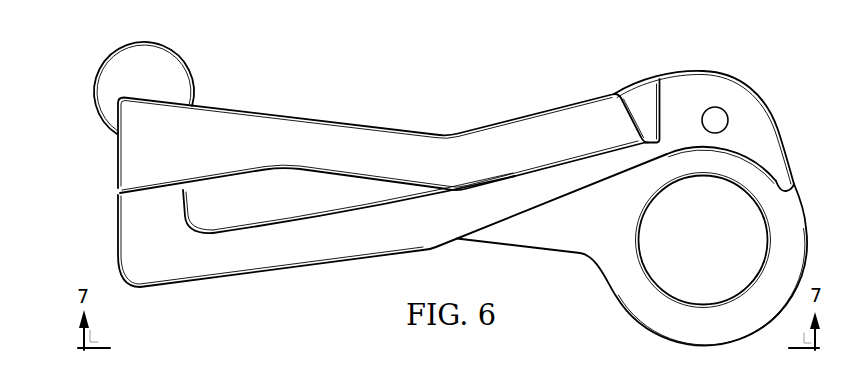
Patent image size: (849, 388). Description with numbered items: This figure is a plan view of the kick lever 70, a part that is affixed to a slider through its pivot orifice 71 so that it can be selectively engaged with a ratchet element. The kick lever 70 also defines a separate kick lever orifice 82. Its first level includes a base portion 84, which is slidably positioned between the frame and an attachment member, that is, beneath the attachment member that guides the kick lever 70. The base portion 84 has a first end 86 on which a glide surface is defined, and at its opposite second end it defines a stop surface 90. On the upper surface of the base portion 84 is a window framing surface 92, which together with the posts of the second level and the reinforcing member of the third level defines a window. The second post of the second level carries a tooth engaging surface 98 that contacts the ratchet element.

The kick lever 70 is at (313, 75).
The pivot orifice 71 is at (713, 250).
The kick lever orifice 82 is at (713, 106).
The base portion 84 is at (304, 283).
The first end 86 is at (778, 191).
The stop surface 90 is at (85, 92).
The window framing surface 92 is at (235, 268).
The tooth engaging surface 98 is at (117, 190).